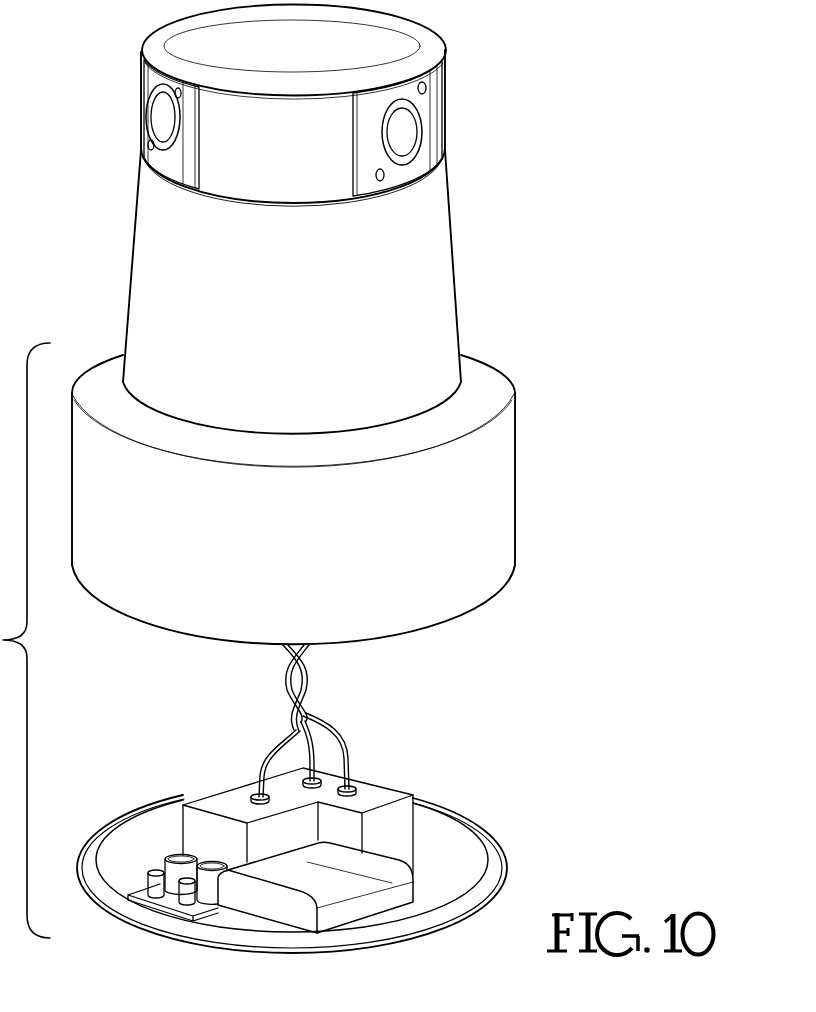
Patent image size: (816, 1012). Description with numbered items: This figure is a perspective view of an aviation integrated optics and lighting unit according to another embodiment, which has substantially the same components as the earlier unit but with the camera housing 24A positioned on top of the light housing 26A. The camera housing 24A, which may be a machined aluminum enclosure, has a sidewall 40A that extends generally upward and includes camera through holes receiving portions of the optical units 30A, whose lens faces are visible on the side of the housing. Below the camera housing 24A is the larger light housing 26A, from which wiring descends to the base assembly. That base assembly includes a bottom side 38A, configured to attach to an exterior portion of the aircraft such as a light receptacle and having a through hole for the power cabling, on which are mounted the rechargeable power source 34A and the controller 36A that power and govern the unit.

The camera housing 24A is at (433, 42).
The optical unit 30A is at (412, 130).
The sidewall 40A is at (192, 185).
The light housing 26A is at (441, 268).
The rechargeable power source 34A is at (160, 862).
The controller 36A is at (368, 883).
The bottom side 38A is at (468, 828).